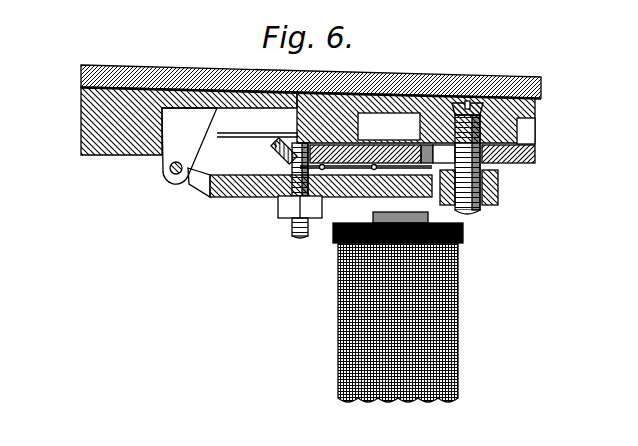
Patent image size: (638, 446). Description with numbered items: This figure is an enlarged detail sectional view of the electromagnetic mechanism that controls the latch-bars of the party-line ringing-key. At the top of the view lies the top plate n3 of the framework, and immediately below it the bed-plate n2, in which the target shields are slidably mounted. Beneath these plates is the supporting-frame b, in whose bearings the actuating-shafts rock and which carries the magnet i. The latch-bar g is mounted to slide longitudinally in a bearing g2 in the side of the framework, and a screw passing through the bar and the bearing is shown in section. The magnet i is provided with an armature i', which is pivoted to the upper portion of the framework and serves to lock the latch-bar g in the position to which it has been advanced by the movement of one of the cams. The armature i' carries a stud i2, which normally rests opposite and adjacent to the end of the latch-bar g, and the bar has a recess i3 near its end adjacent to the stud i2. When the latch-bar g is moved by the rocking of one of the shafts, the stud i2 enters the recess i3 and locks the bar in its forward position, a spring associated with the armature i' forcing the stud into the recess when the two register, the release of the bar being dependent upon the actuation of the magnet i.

The top plate n3 is at (153, 73).
The bed-plate n2 is at (420, 99).
The supporting-frame b is at (81, 114).
The latch-bar g is at (518, 165).
The bearing g2 is at (492, 211).
The armature i' is at (297, 167).
The stud i2 is at (272, 200).
The recess i3 is at (275, 151).
The magnet i is at (404, 307).